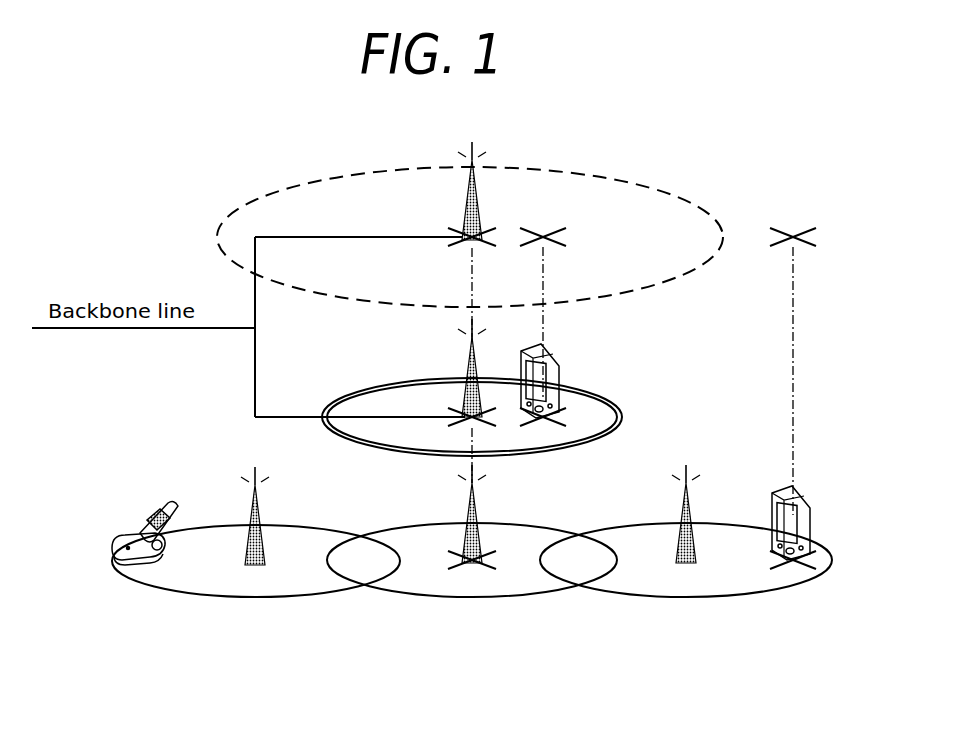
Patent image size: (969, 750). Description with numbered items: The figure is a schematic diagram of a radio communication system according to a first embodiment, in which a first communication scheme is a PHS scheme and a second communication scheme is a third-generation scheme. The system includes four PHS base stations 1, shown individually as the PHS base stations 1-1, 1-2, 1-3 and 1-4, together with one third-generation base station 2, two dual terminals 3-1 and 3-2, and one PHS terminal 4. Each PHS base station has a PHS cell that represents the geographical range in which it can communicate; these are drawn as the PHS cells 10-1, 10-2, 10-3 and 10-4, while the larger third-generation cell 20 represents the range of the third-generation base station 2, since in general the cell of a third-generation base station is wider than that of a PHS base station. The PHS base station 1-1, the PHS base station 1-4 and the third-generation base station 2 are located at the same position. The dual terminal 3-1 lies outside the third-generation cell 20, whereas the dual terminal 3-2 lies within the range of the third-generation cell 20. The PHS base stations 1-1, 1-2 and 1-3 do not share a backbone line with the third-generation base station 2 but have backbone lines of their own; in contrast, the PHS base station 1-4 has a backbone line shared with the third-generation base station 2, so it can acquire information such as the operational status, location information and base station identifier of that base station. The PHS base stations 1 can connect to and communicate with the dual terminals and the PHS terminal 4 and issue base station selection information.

The PHS base station 1 is at (470, 522).
The PHS base station 1-1 is at (470, 566).
The PHS base station 1-2 is at (263, 565).
The PHS base station 1-3 is at (649, 570).
The PHS base station 1-4 is at (477, 420).
The 3G base station 2 is at (462, 232).
The dual terminal 3-1 is at (810, 500).
The dual terminal 3-2 is at (563, 376).
The PHS terminal 4 is at (138, 514).
The PHS cell 10-1 is at (426, 526).
The PHS cell 10-2 is at (215, 524).
The PHS cell 10-3 is at (638, 525).
The PHS cell 10-4 is at (388, 383).
The 3G cell 20 is at (587, 176).